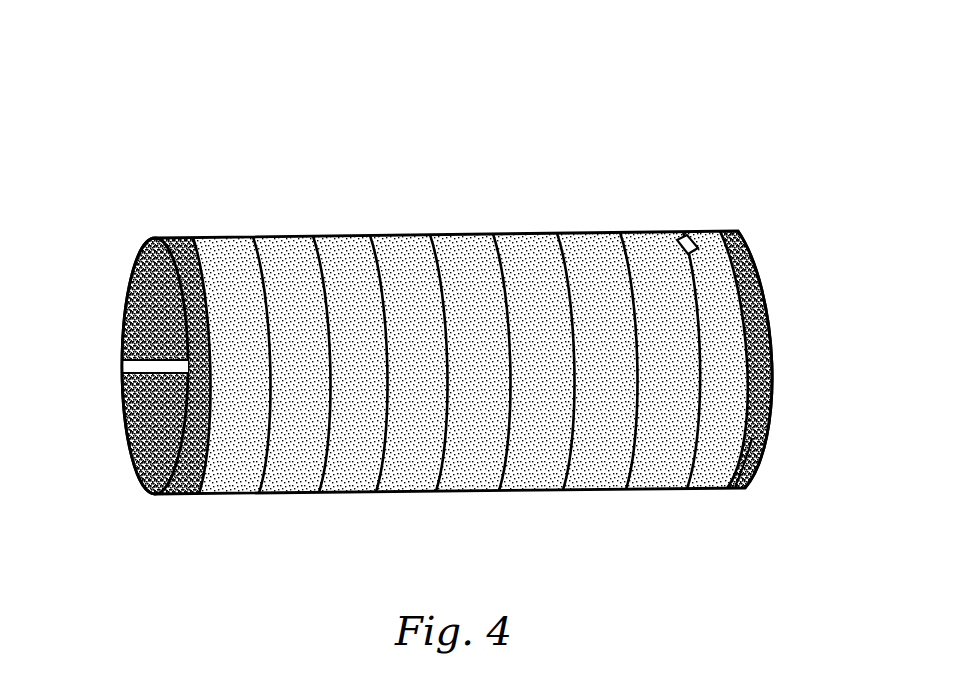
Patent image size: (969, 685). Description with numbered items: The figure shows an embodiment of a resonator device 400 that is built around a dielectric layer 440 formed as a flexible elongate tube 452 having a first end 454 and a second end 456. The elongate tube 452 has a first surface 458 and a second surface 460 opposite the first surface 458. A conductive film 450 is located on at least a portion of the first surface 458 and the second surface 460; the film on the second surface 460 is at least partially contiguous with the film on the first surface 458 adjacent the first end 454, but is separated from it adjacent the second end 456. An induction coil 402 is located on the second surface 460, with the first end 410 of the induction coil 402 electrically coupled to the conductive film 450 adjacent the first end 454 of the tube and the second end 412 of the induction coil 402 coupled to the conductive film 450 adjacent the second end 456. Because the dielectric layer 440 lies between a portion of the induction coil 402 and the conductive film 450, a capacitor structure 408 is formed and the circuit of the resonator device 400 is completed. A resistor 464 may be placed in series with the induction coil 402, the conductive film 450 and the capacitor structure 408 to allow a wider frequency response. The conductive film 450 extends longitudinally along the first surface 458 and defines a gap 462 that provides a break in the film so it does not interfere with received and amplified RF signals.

The resonator device 400 is at (155, 78).
The induction coil 402 is at (388, 255).
The capacitor structure 408 is at (173, 500).
The first end of the induction coil 410 is at (167, 233).
The second end of the induction coil 412 is at (712, 265).
The dielectric layer 440 is at (217, 487).
The conductive film 450 is at (128, 278).
The elongate tube 452 is at (283, 228).
The first end of the elongate tube 454 is at (140, 220).
The second end of the elongate tube 456 is at (727, 228).
The first surface 458 is at (657, 475).
The second surface 460 is at (138, 365).
The gap 462 is at (117, 370).
The resistor 464 is at (686, 238).